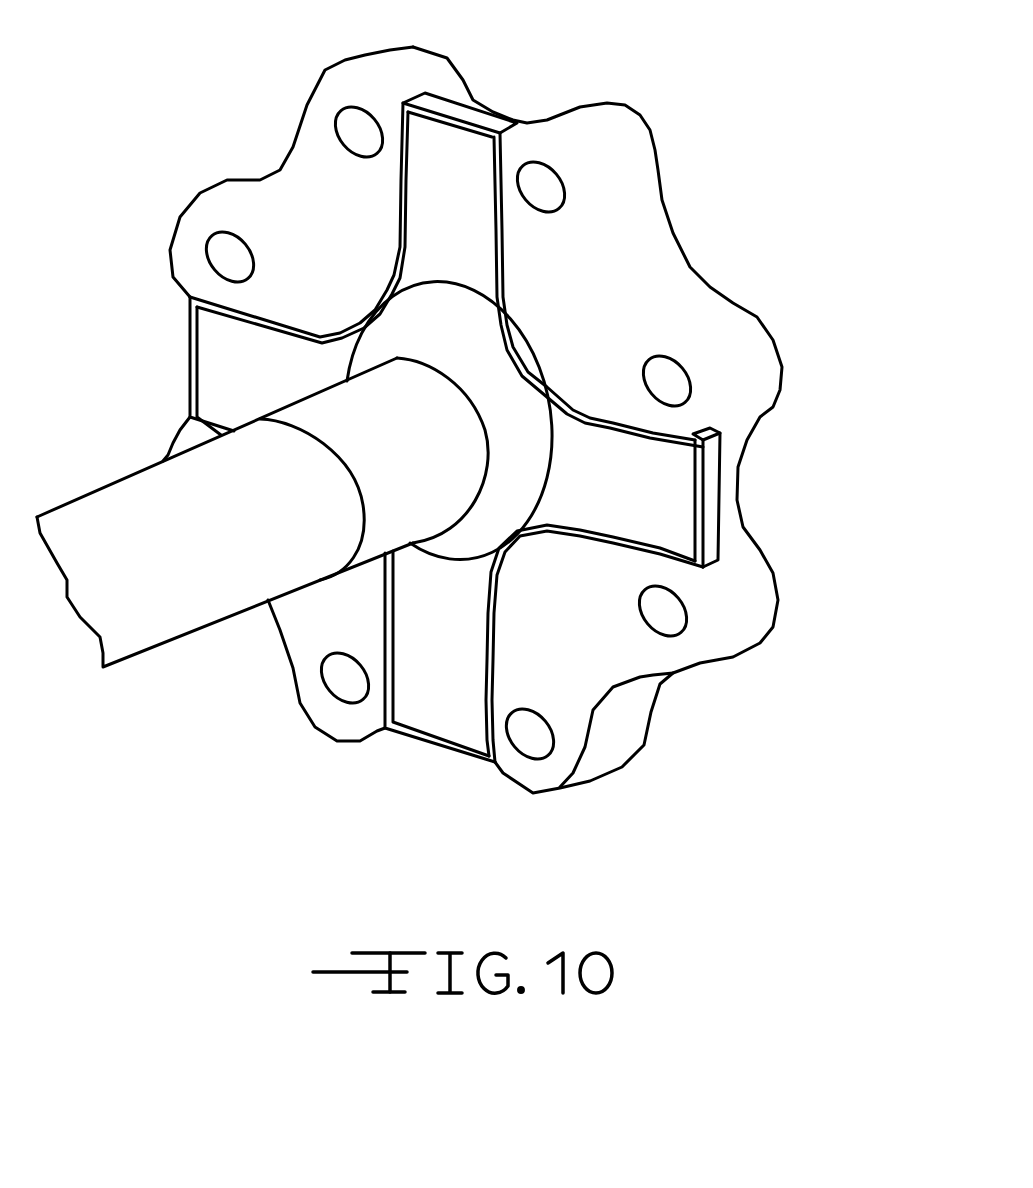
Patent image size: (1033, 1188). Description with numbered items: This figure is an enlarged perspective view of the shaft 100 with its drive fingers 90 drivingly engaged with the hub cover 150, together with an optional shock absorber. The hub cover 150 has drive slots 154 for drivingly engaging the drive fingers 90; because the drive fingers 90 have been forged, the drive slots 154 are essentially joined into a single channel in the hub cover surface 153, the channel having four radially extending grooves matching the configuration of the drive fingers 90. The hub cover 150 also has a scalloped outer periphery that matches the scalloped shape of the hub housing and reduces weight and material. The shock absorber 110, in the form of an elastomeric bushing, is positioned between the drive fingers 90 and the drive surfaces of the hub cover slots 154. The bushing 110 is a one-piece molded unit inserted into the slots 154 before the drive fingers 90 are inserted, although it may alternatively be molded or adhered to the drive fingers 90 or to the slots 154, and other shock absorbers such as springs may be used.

The drive fingers 90 is at (220, 370).
The shaft 100 is at (147, 610).
The shock absorber 110 is at (715, 515).
The hub cover 150 is at (620, 132).
The hub cover surface 153 is at (587, 307).
The drive slots 154 is at (620, 548).